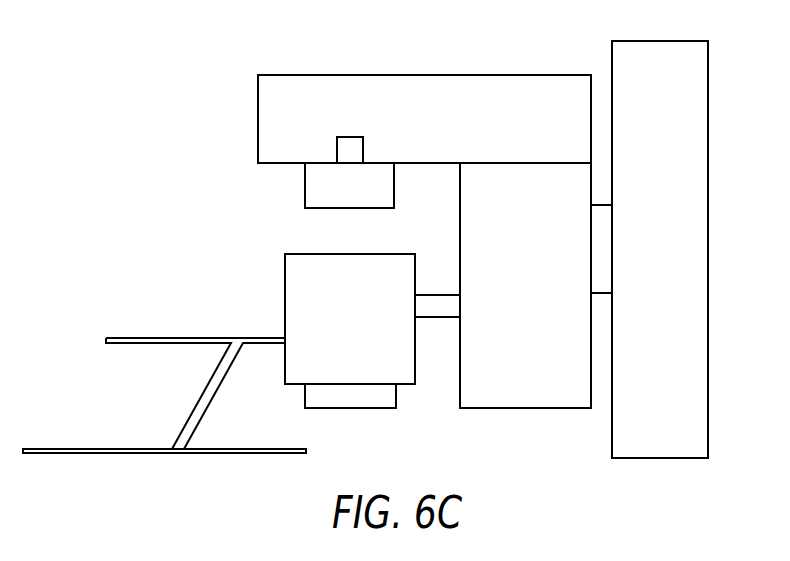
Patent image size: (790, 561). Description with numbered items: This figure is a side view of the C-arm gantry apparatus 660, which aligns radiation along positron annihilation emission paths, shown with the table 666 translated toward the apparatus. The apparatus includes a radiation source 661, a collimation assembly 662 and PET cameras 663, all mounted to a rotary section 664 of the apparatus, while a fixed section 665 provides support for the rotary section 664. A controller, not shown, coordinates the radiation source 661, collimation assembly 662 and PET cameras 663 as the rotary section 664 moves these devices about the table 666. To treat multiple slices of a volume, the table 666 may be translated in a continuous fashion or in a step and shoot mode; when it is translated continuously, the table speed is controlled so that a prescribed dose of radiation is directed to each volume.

The C-arm gantry apparatus 660 is at (172, 34).
The radiation source 661 is at (350, 137).
The collimation assembly 662 is at (395, 186).
The PET cameras 663 is at (350, 254).
The rotary section 664 is at (441, 64).
The fixed section 665 is at (660, 41).
The table 666 is at (201, 395).